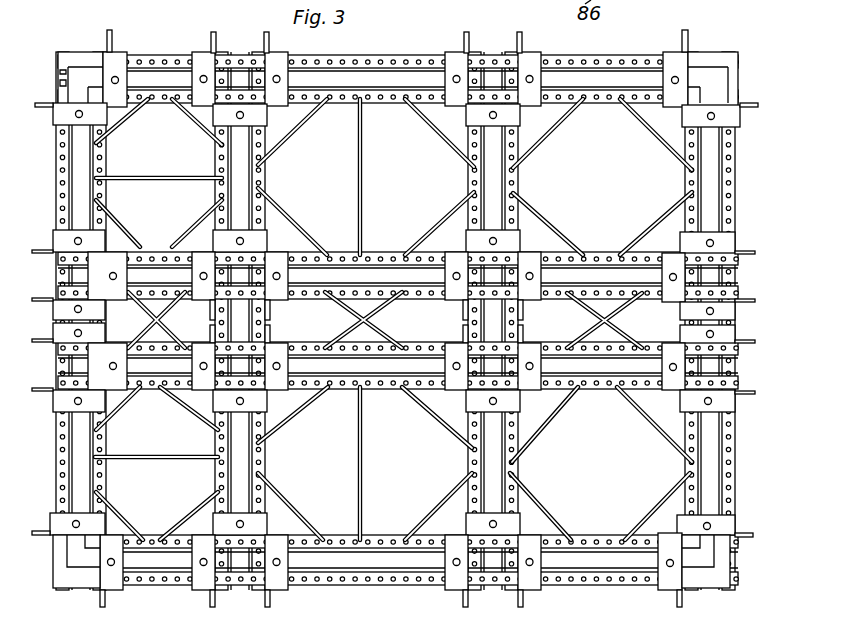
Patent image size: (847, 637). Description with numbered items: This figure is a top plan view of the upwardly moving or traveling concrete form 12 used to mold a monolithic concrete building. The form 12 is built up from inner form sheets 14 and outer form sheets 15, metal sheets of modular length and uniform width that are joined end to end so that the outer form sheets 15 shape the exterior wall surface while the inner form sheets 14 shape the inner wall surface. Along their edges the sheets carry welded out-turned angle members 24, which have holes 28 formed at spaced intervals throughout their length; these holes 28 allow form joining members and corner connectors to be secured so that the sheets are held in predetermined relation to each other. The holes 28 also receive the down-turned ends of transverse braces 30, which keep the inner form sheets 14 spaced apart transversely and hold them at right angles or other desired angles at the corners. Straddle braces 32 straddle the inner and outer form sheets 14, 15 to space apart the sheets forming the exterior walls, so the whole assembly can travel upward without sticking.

The concrete form 12 is at (375, 51).
The inner form sheets 14 is at (338, 97).
The outer form sheets 15 is at (65, 157).
The out-turned angle members 24 is at (101, 150).
The holes 28 is at (393, 99).
The transverse braces 30 is at (453, 152).
The straddle braces 32 is at (267, 36).